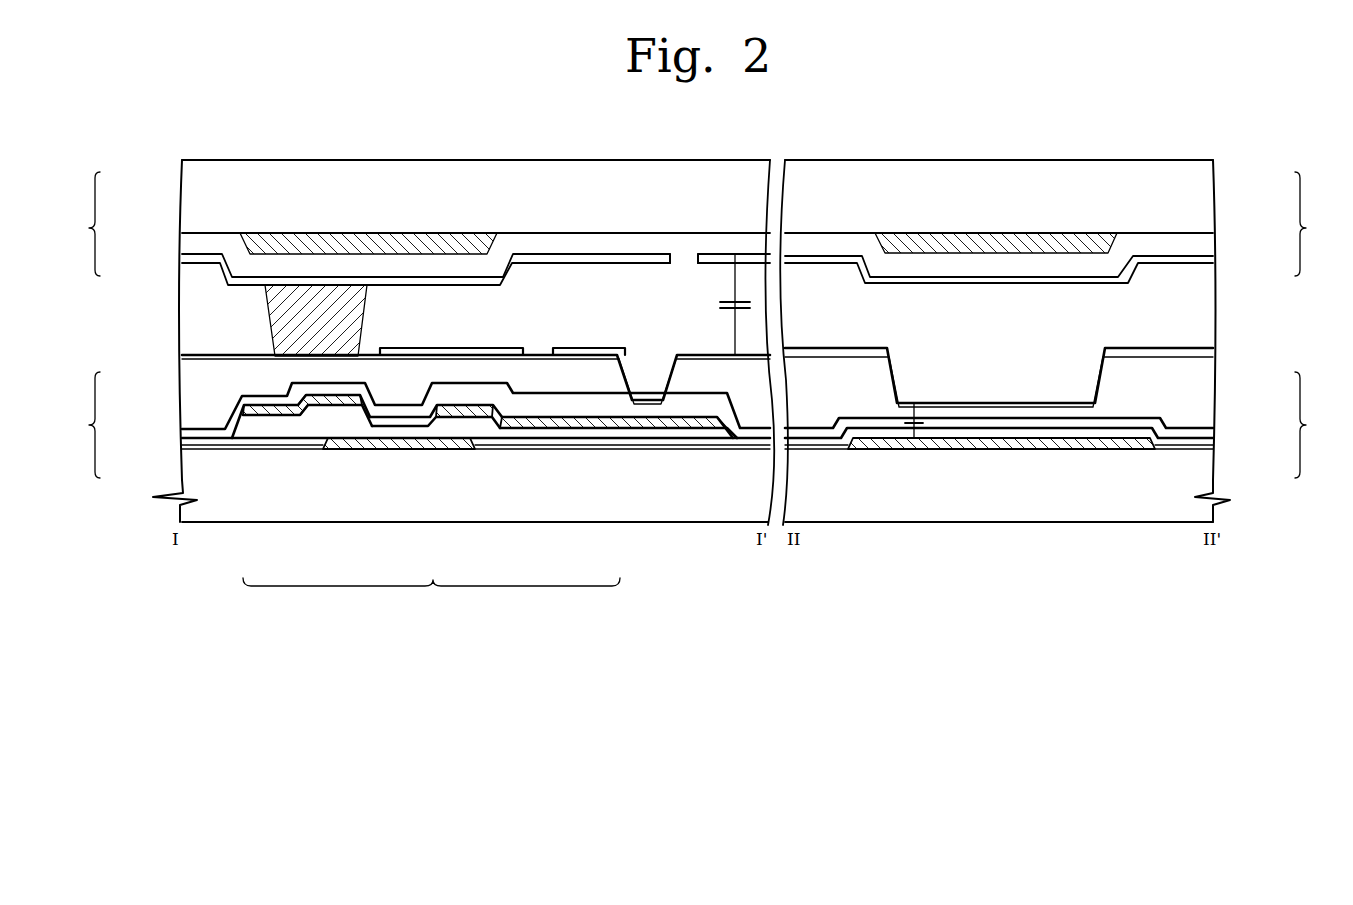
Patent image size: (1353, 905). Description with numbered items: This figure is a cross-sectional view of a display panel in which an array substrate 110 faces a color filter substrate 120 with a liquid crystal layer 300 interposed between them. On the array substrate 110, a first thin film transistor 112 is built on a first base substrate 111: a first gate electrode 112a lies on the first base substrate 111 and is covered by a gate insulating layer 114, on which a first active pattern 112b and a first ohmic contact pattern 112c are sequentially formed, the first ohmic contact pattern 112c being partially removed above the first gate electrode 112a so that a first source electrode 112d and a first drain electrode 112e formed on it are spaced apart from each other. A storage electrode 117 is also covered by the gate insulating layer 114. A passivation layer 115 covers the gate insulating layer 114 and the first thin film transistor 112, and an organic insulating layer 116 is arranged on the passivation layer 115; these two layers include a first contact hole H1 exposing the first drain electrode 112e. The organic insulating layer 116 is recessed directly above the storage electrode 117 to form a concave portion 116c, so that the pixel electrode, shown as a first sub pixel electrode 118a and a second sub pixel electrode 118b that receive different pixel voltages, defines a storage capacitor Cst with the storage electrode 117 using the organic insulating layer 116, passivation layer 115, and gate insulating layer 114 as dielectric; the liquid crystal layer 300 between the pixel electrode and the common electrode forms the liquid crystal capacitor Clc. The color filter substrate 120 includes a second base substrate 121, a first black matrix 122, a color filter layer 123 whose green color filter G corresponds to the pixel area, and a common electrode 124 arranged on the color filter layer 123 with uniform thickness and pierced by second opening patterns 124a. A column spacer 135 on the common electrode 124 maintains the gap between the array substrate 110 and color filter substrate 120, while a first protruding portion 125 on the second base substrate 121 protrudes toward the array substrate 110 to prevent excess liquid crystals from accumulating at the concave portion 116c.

The second base substrate 121 is at (182, 183).
The first black matrix 122 is at (268, 236).
The first protruding portion 125 is at (1072, 232).
The color filter layer 123 is at (182, 241).
The common electrode 124 is at (182, 262).
The second opening pattern 124a is at (679, 265).
The color filter substrate 120 is at (699, 224).
The column spacer 135 is at (278, 320).
The liquid crystal layer 300 is at (1213, 305).
The first sub pixel electrode 118a is at (572, 350).
The second sub pixel electrode 118b is at (455, 348).
The organic insulating layer 116 is at (182, 380).
The concave portion 116c is at (1046, 371).
The passivation layer 115 is at (182, 430).
The gate insulating layer 114 is at (490, 443).
The storage electrode 117 is at (993, 450).
The first base substrate 111 is at (182, 467).
The array substrate 110 is at (699, 425).
The first thin film transistor 112 is at (431, 597).
The first gate electrode 112a is at (400, 440).
The first active pattern 112b is at (527, 433).
The first ohmic contact pattern 112c is at (298, 423).
The first source electrode 112d is at (263, 410).
The first drain electrode 112e is at (597, 412).
The green color filter G is at (840, 255).
The first contact hole H1 is at (656, 372).
The liquid crystal capacitor Clc is at (716, 305).
The storage capacitor Cst is at (921, 407).